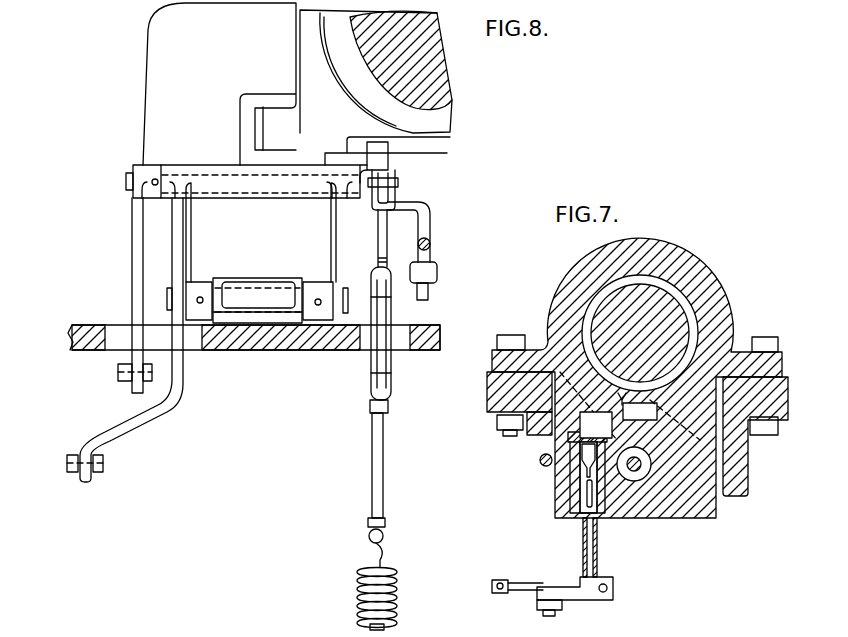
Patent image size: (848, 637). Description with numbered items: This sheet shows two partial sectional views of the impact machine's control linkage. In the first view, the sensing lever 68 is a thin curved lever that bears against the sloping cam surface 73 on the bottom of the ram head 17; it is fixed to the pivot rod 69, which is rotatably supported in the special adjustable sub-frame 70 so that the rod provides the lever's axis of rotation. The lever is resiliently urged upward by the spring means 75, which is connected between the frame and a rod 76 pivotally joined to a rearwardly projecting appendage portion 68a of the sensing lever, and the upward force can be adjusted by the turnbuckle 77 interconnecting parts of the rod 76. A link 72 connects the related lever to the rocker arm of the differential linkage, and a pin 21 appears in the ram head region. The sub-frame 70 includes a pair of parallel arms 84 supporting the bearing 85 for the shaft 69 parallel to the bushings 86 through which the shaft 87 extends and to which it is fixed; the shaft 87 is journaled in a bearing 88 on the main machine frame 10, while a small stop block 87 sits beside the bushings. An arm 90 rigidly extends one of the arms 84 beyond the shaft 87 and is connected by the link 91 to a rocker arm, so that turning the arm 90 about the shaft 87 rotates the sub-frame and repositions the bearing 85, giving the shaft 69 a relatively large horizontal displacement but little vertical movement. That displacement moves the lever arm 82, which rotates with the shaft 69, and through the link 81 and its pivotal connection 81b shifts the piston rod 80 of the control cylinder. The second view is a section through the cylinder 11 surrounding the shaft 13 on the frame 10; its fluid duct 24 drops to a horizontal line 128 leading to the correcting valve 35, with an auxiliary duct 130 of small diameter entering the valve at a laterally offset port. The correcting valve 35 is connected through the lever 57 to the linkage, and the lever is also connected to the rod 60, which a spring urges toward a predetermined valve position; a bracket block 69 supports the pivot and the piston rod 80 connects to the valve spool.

In FIG. 8, the machine frame 10 is at (65, 320).
In FIG. 7, the machine frame 10 is at (484, 401).
In FIG. 8, the cylinder 11 is at (442, 120).
In FIG. 7, the cylinder 11 is at (697, 262).
In FIG. 8, the shaft 13 is at (437, 88).
In FIG. 7, the shaft 13 is at (652, 290).
In FIG. 8, the ram head 17 is at (137, 242).
In FIG. 8, the pin 21 is at (257, 128).
In FIG. 7, the fluid duct 24 is at (630, 406).
In FIG. 7, the correcting valve 35 is at (566, 489).
In FIG. 7, the lever 57 is at (517, 587).
In FIG. 7, the rod 60 is at (499, 580).
In FIG. 8, the sensing lever 68 is at (392, 160).
In FIG. 8, the appendage portion 68a is at (396, 172).
In FIG. 8, the pivot rod 69 is at (126, 182).
In FIG. 8, the adjustable sub-frame 70 is at (250, 275).
In FIG. 8, the link 72 is at (118, 367).
In FIG. 8, the cam surface 73 is at (442, 143).
In FIG. 8, the spring means 75 is at (358, 587).
In FIG. 8, the rod 76 is at (384, 456).
In FIG. 8, the turnbuckle 77 is at (376, 368).
In FIG. 7, the piston rod 80 is at (638, 478).
In FIG. 8, the link 81 is at (436, 262).
In FIG. 8, the pivotal connection 81b is at (437, 280).
In FIG. 8, the lever arm 82 is at (431, 222).
In FIG. 8, the parallel arms 84 is at (191, 227).
In FIG. 8, the bearing 85 is at (268, 198).
In FIG. 8, the bushing 86 is at (200, 282).
In FIG. 8, the shaft 87 is at (167, 293).
In FIG. 8, the bearing 88 is at (247, 321).
In FIG. 8, the arm 90 is at (147, 407).
In FIG. 8, the link 91 is at (72, 476).
In FIG. 7, the horizontal line 128 is at (601, 425).
In FIG. 7, the auxiliary duct 130 is at (540, 461).